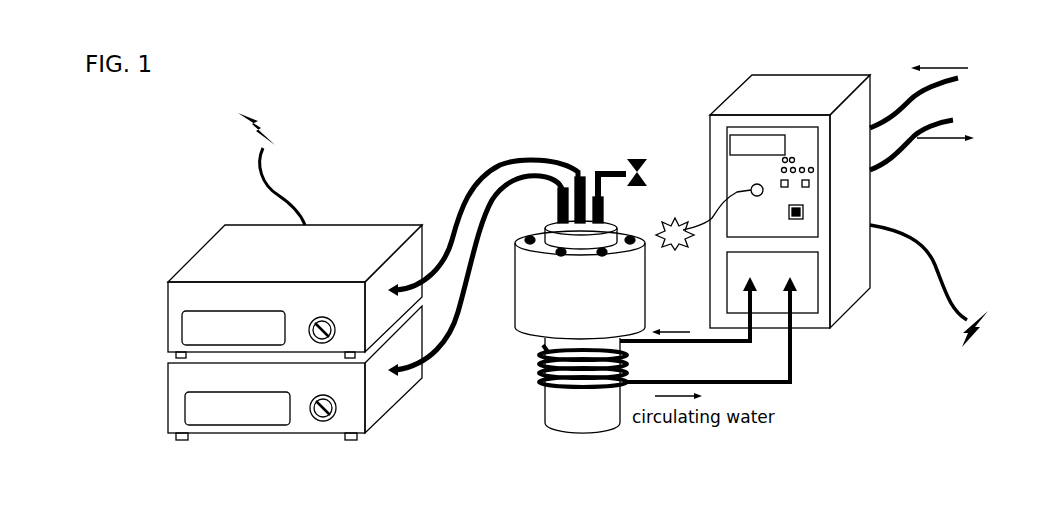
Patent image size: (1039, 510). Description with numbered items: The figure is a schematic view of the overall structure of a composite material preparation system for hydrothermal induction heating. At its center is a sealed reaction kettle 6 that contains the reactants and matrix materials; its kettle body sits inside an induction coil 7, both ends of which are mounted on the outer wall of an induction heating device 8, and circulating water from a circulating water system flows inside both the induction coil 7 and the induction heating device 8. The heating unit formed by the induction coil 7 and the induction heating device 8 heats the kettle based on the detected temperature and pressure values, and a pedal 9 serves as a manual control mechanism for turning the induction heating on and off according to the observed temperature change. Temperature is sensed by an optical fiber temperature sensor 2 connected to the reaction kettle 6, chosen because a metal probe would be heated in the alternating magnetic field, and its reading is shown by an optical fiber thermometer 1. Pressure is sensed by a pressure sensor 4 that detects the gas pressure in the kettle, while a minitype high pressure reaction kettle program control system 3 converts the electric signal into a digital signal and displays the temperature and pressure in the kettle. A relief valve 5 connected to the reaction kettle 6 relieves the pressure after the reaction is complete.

The optical fiber thermometer 1 is at (295, 231).
The optical fiber temperature sensor 2 is at (483, 195).
The minitype high pressure reaction kettle program control system 3 is at (289, 434).
The pressure sensor 4 is at (480, 225).
The relief valve 5 is at (636, 135).
The reaction kettle 6 is at (547, 343).
The induction coil 7 is at (563, 383).
The induction heating device 8 is at (847, 312).
The pedal 9 is at (703, 187).